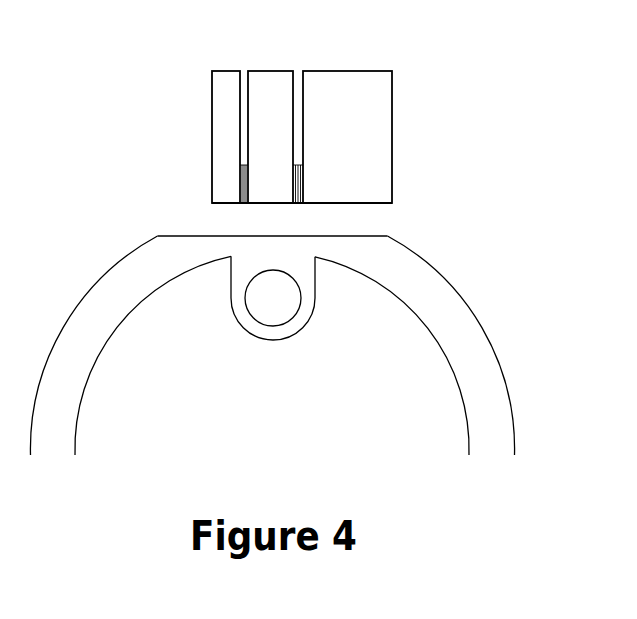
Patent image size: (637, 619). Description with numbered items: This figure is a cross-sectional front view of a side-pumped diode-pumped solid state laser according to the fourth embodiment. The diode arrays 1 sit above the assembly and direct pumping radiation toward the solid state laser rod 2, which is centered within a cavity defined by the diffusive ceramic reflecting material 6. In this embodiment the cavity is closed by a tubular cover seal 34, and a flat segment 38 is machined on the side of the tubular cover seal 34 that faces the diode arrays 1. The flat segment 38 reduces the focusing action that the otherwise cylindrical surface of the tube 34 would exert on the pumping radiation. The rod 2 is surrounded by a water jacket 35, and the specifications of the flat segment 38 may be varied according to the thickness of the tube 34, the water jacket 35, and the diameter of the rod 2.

The diode arrays 1 is at (227, 88).
The solid state laser rod 2 is at (263, 310).
The diffusive ceramic reflecting material 6 is at (127, 348).
The tubular cover seal 34 is at (437, 298).
The water jacket 35 is at (240, 277).
The flat segment 38 is at (178, 226).